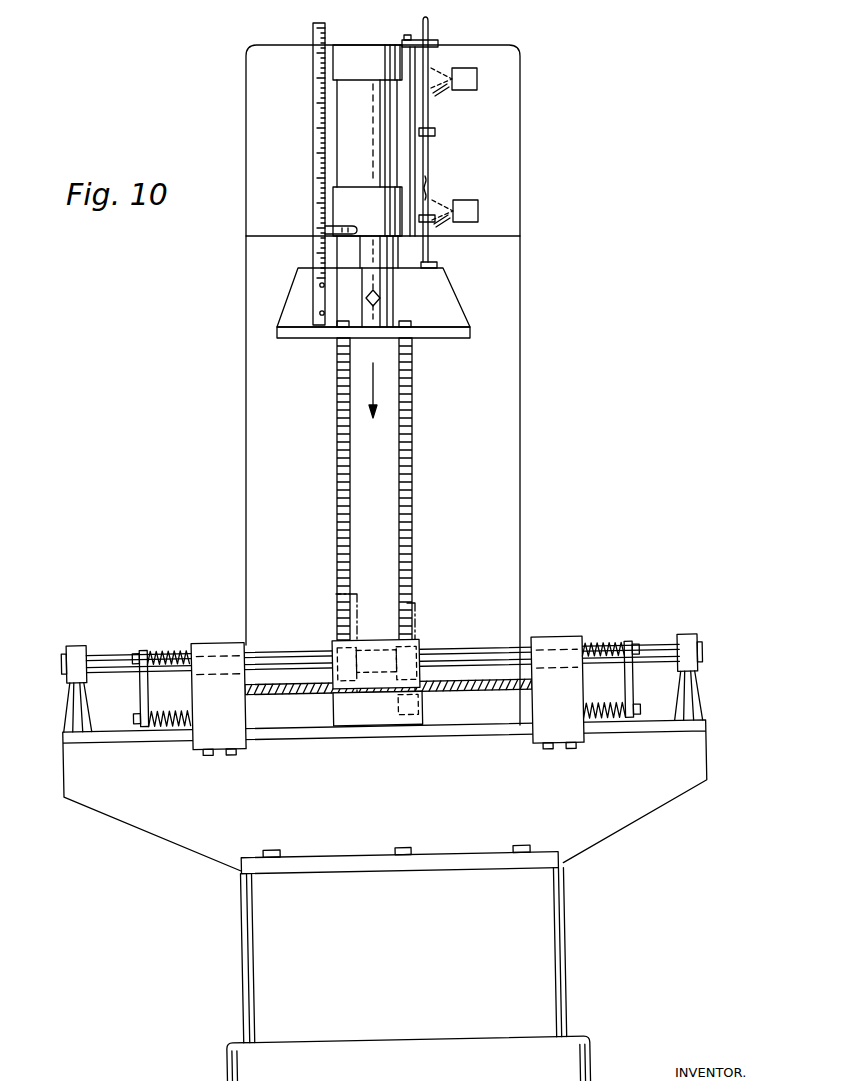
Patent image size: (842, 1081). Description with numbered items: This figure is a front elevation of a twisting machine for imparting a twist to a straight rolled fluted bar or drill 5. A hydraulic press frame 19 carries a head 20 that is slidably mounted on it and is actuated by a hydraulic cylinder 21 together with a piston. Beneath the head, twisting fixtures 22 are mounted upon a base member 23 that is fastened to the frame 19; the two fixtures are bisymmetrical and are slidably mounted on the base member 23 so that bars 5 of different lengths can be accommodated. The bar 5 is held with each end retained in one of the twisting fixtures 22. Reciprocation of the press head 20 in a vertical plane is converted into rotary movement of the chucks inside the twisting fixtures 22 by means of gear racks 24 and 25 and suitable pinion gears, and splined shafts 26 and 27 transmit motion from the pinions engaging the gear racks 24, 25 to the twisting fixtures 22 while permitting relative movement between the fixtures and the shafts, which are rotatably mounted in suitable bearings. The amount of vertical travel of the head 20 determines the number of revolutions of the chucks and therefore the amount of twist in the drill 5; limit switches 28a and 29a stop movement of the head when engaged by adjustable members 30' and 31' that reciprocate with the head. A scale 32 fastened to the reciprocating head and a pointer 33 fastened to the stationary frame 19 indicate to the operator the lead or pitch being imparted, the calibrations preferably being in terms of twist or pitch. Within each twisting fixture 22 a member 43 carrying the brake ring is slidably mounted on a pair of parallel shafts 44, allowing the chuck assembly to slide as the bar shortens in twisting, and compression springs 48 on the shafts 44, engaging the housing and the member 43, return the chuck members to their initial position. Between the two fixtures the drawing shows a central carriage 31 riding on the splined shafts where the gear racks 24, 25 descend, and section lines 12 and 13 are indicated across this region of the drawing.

The bar or drill 5 is at (465, 694).
The section line 12 is at (326, 718).
The section line 13 is at (403, 718).
The hydraulic press frame 19 is at (520, 462).
The head 20 is at (447, 298).
The hydraulic cylinder 21 is at (365, 100).
The twisting fixture 22 is at (215, 650).
The base member 23 is at (632, 810).
The gear rack 24 is at (413, 470).
The gear rack 25 is at (336, 482).
The splined shaft 26 is at (472, 652).
The splined shaft 27 is at (298, 658).
The limit switch 28a is at (478, 210).
The limit switch 29a is at (477, 80).
The adjustable member 30' is at (449, 142).
The carriage 31 is at (395, 667).
The adjustable member 31' is at (453, 191).
The scale 32 is at (316, 135).
The pointer 33 is at (326, 230).
The member 43 is at (143, 706).
The parallel shafts 44 is at (182, 650).
The compression spring 48 is at (170, 652).